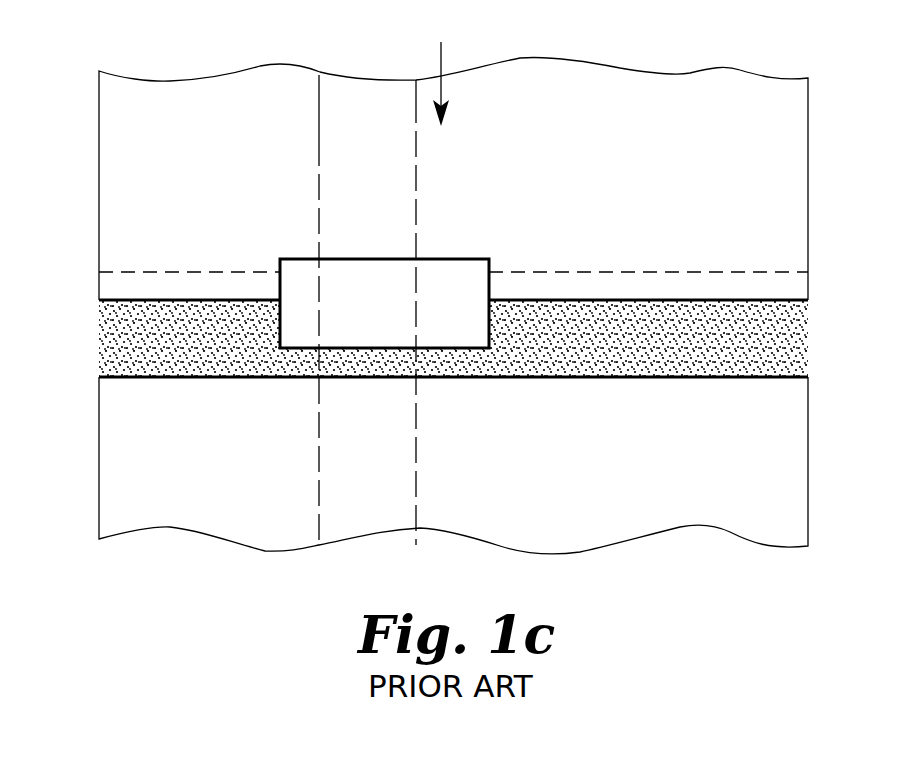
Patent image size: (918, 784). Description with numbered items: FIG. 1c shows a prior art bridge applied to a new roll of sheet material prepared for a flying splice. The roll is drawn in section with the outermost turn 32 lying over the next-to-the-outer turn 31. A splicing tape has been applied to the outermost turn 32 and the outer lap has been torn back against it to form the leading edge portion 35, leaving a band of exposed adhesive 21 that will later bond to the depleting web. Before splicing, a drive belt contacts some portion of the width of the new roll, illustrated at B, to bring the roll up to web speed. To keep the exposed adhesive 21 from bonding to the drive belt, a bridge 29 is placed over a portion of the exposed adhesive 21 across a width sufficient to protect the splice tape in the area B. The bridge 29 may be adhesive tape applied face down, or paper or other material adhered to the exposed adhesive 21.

The next-to-the-outer turn 31 is at (113, 200).
The outermost turn 32 is at (113, 487).
The exposed adhesive 21 is at (795, 334).
The leading edge portion 35 is at (110, 305).
The bridge 29 is at (457, 270).
The area of drive belt contact B is at (318, 110).